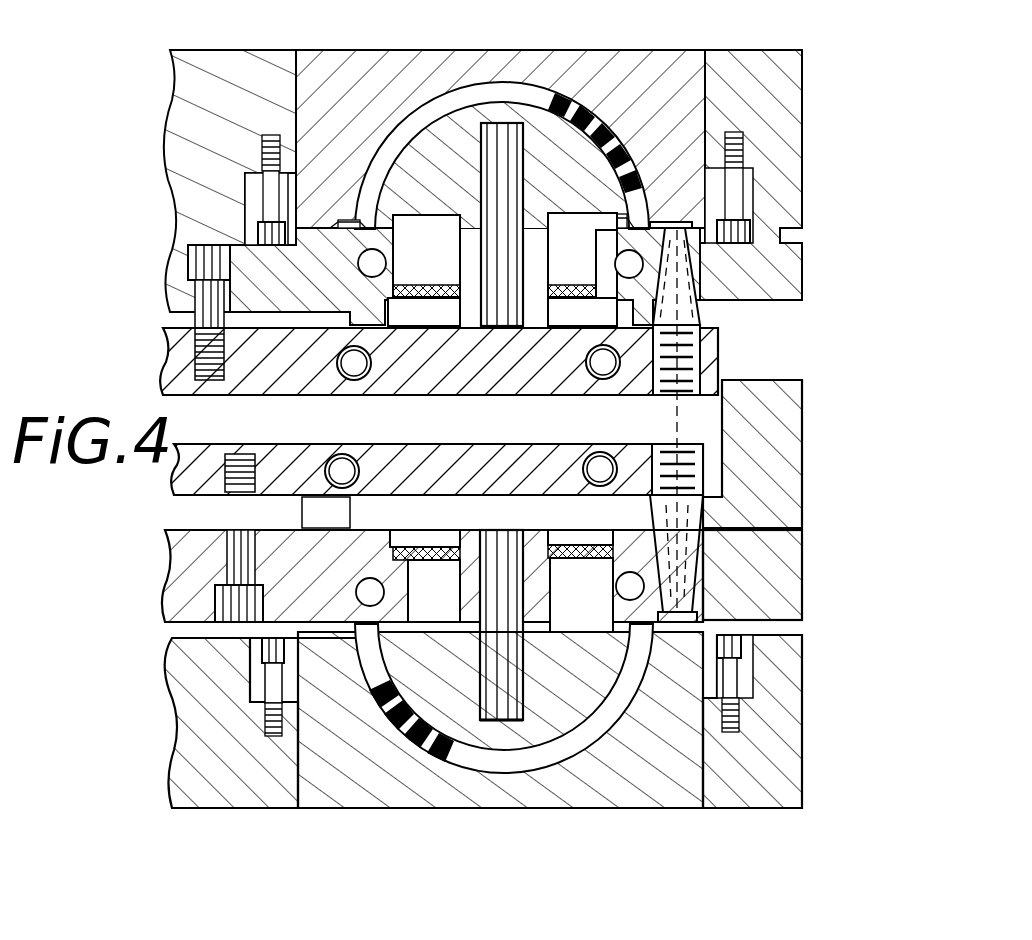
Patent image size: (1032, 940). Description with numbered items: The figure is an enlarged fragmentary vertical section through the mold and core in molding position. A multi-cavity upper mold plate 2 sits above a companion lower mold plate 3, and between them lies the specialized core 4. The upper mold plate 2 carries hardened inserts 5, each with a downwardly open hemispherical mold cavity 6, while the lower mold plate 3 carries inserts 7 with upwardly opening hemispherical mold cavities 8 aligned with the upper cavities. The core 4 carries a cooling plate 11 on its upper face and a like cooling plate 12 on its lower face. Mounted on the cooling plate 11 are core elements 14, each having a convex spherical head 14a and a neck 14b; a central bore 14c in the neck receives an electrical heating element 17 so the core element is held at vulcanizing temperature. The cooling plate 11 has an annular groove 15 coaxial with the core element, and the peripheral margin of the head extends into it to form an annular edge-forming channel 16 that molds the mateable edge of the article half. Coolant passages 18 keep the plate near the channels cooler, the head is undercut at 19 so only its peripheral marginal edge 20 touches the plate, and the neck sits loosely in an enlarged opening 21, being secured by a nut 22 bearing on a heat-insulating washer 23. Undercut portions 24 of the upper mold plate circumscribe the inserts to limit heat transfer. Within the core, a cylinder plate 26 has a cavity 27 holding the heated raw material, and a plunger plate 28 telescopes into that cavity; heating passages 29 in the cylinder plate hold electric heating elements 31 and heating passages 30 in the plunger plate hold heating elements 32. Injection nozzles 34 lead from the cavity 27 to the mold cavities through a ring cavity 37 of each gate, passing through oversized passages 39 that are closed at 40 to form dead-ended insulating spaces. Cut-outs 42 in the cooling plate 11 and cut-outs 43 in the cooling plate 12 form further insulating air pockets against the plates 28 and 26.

The upper mold plate 2 is at (188, 74).
The lower mold plate 3 is at (165, 740).
The core 4 is at (748, 381).
The hardened inserts 5 is at (667, 63).
The mold cavity 6 is at (520, 92).
The inserts 7 is at (665, 805).
The mold cavity 8 is at (492, 774).
The cooling plate 11 is at (795, 270).
The cooling plate 12 is at (790, 572).
The core element 14 is at (466, 108).
The head 14a is at (420, 112).
The neck 14b is at (426, 256).
The central bore 14c is at (424, 312).
The annular groove 15 is at (484, 237).
The edge-forming channel 16 is at (340, 232).
The electrical heating element 17 is at (508, 262).
The coolant passages 18 is at (499, 257).
The undercut 19 is at (602, 222).
The peripheral marginal edge 20 is at (390, 228).
The enlarged opening 21 is at (440, 285).
The nut 22 is at (582, 312).
The washer 23 is at (572, 284).
The undercut portions 24 is at (800, 232).
The cylinder plate 26 is at (785, 405).
The cavity 27 is at (438, 428).
The plunger plate 28 is at (572, 385).
The heating passages 29 is at (343, 458).
The heating passages 30 is at (342, 378).
The electric heating elements 31 is at (352, 462).
The heating elements 32 is at (346, 378).
The injection nozzles 34 is at (705, 322).
The ring cavity 37 is at (668, 224).
The passages 39 is at (735, 302).
The closed portion of passage 40 is at (690, 238).
The cut-outs 42 is at (190, 324).
The cut-outs 43 is at (197, 513).